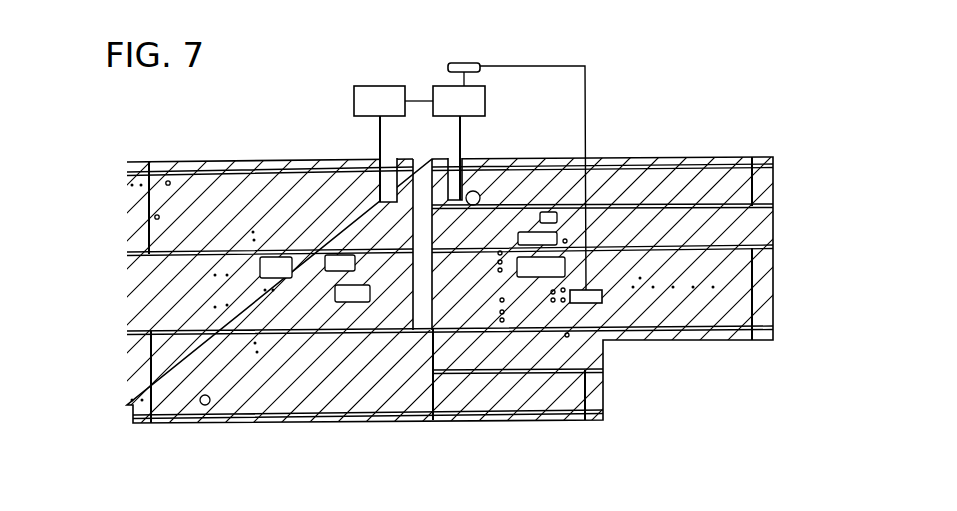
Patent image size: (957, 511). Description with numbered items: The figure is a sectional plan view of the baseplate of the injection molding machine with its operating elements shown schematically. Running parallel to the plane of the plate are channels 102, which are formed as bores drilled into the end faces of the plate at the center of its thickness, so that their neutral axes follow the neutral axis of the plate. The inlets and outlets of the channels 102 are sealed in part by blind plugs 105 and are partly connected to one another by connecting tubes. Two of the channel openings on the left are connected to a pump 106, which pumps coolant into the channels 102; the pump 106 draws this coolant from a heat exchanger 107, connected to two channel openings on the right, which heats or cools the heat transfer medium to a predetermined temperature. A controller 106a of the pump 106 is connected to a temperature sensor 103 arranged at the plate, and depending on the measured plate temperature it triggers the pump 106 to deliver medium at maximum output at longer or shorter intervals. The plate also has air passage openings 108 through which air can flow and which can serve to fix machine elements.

The channels 102 is at (252, 160).
The temperature sensor 103 is at (600, 303).
The blind plugs 105 is at (82, 173).
The pump 106 is at (446, 93).
The controller 106a is at (474, 64).
The heat exchanger 107 is at (374, 93).
The openings 108 is at (639, 282).